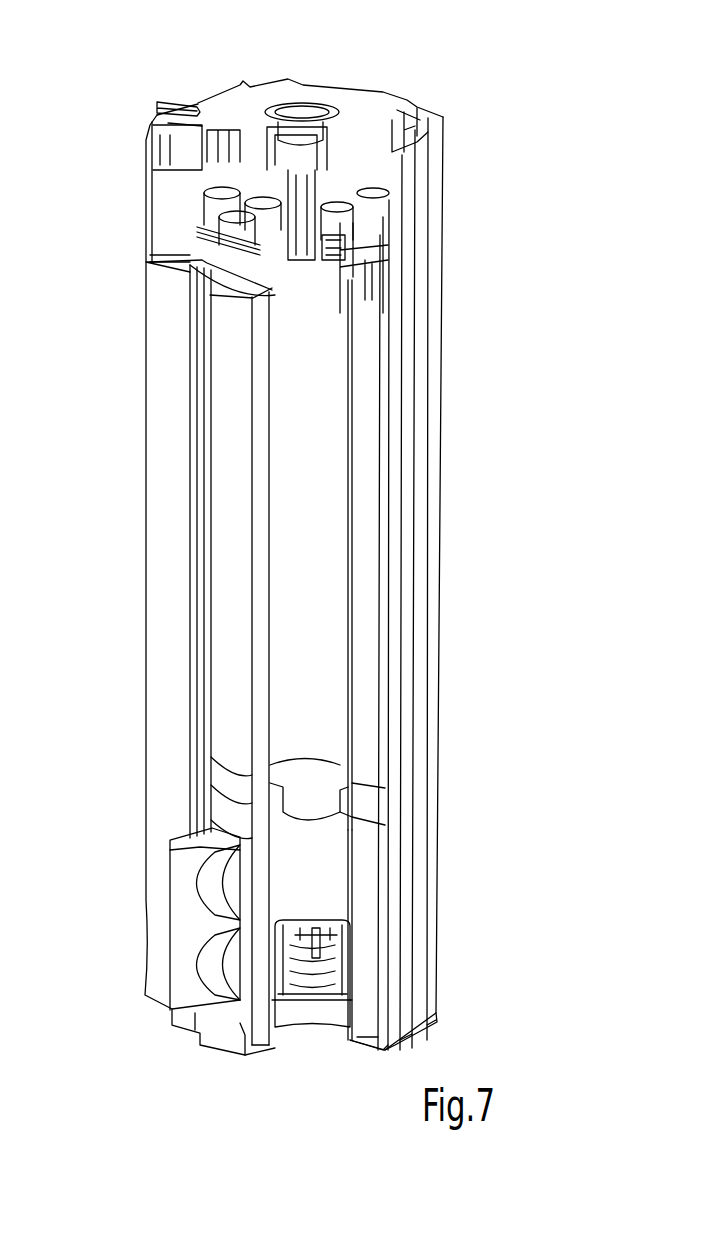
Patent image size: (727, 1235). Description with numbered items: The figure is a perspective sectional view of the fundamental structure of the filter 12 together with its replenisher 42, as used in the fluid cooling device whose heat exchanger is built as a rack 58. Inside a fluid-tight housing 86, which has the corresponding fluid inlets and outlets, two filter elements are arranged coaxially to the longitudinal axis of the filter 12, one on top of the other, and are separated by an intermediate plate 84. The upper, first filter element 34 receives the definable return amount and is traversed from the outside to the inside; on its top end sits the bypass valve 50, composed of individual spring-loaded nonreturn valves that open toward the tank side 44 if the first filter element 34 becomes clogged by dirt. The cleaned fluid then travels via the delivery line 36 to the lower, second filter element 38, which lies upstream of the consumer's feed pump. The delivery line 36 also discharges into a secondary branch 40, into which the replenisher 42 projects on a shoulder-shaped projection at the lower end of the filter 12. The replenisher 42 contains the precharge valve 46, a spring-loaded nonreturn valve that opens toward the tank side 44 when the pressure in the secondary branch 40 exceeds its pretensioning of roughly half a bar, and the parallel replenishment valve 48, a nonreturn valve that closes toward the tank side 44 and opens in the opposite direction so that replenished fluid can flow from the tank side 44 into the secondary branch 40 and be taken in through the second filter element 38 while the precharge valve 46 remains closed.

The filter 12 is at (404, 371).
The first filter element 34 is at (362, 478).
The delivery line 36 is at (322, 598).
The second filter element 38 is at (368, 877).
The secondary branch 40 is at (300, 871).
The replenisher 42 is at (403, 938).
The tank side 44 is at (317, 1007).
The precharge valve 46 is at (340, 942).
The replenishment valve 48 is at (340, 942).
The bypass valve 50 is at (347, 230).
The rack 58 is at (178, 102).
The intermediate plate 84 is at (358, 797).
The housing 86 is at (168, 428).